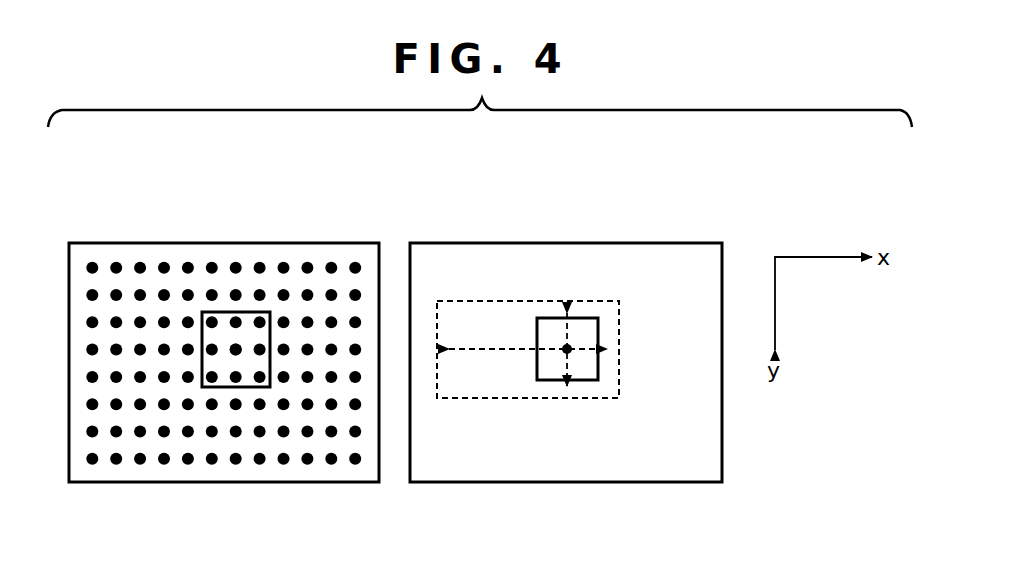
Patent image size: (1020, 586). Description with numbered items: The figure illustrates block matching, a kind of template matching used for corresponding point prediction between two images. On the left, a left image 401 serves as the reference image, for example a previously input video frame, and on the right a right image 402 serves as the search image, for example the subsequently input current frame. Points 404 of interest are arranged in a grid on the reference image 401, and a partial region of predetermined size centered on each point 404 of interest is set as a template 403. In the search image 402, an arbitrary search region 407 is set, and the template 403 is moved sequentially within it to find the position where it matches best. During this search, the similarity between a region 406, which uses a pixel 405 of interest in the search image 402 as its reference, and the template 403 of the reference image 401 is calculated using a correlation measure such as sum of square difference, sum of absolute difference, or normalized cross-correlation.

The left image 401 is at (105, 482).
The right image 402 is at (447, 482).
The template 403 is at (203, 312).
The point of interest 404 is at (237, 348).
The pixel of interest 405 is at (567, 349).
The region 406 is at (545, 318).
The search region 407 is at (590, 398).